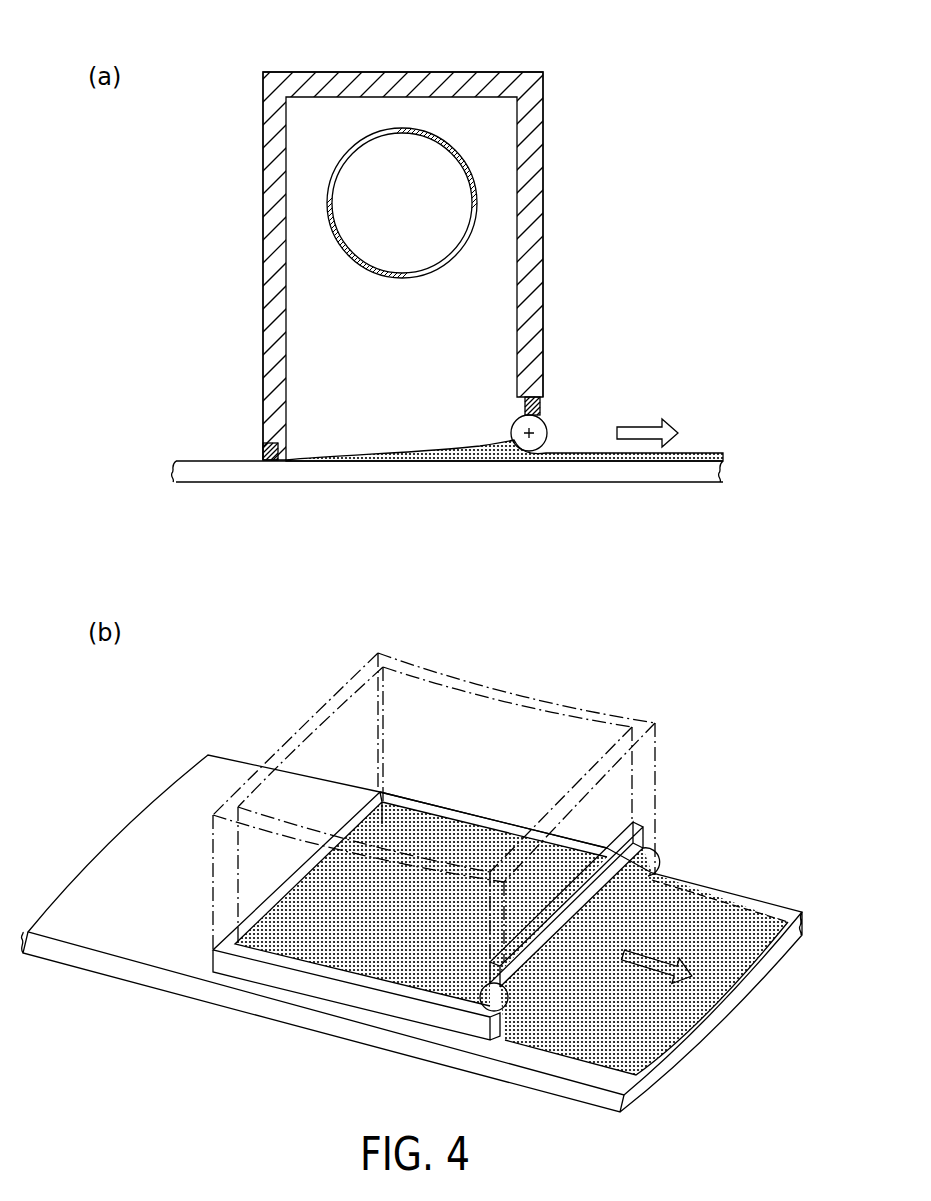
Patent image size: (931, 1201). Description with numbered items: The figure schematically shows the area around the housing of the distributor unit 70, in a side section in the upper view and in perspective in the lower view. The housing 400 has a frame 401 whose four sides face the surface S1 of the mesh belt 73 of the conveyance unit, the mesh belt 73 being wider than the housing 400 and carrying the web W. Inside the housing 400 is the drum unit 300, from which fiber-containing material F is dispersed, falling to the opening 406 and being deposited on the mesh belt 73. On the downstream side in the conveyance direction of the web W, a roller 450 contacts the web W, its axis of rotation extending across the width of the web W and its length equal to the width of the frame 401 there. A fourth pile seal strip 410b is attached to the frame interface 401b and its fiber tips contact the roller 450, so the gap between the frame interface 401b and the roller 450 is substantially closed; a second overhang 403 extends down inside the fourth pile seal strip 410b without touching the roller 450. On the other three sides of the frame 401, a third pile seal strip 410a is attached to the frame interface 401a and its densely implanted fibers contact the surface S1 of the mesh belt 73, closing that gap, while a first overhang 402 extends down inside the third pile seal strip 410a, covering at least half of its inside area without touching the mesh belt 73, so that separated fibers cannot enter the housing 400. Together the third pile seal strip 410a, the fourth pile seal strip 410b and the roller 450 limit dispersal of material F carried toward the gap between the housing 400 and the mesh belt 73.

The distributor unit 70 is at (566, 58).
The housing 400 is at (543, 117).
The frame 401 is at (543, 304).
The frame interface 401a is at (288, 458).
The frame interface 401b is at (523, 412).
The first overhang 402 is at (288, 440).
The second overhang 403 is at (517, 397).
The opening 406 is at (398, 450).
The third pile seal strip 410a is at (265, 447).
The fourth pile seal strip 410b is at (540, 402).
The roller 450 is at (547, 421).
The drum unit 300 is at (441, 270).
The mesh belt 73 is at (215, 482).
The web W is at (708, 456).
The surface S1 is at (185, 458).
The material F is at (440, 432).